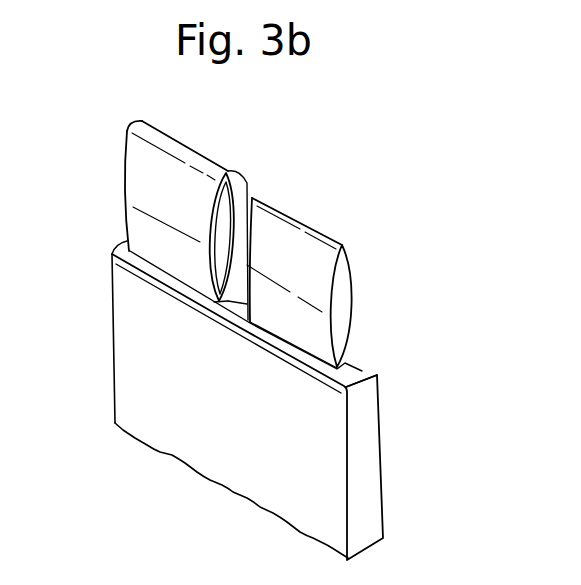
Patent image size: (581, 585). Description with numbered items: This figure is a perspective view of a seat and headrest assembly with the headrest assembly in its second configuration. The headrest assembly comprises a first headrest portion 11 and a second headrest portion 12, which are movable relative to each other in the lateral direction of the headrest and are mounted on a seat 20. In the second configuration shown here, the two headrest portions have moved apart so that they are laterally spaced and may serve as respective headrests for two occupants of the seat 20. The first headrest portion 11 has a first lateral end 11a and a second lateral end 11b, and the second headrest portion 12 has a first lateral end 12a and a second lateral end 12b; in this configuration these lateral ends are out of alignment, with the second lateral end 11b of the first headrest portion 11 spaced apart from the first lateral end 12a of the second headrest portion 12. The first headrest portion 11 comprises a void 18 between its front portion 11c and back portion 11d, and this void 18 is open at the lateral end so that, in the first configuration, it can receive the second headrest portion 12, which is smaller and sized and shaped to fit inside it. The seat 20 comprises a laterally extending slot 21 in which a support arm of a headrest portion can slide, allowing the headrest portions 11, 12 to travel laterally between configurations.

The first headrest portion 11 is at (147, 152).
The first lateral end of the first headrest portion 11a is at (124, 166).
The second lateral end of the first headrest portion 11b is at (243, 181).
The front portion of the first headrest portion 11c is at (145, 230).
The back portion of the first headrest portion 11d is at (237, 183).
The void 18 is at (220, 205).
The second headrest portion 12 is at (302, 252).
The first lateral end of the second headrest portion 12a is at (241, 188).
The second lateral end of the second headrest portion 12b is at (344, 296).
The seat 20 is at (317, 447).
The slot 21 is at (352, 366).